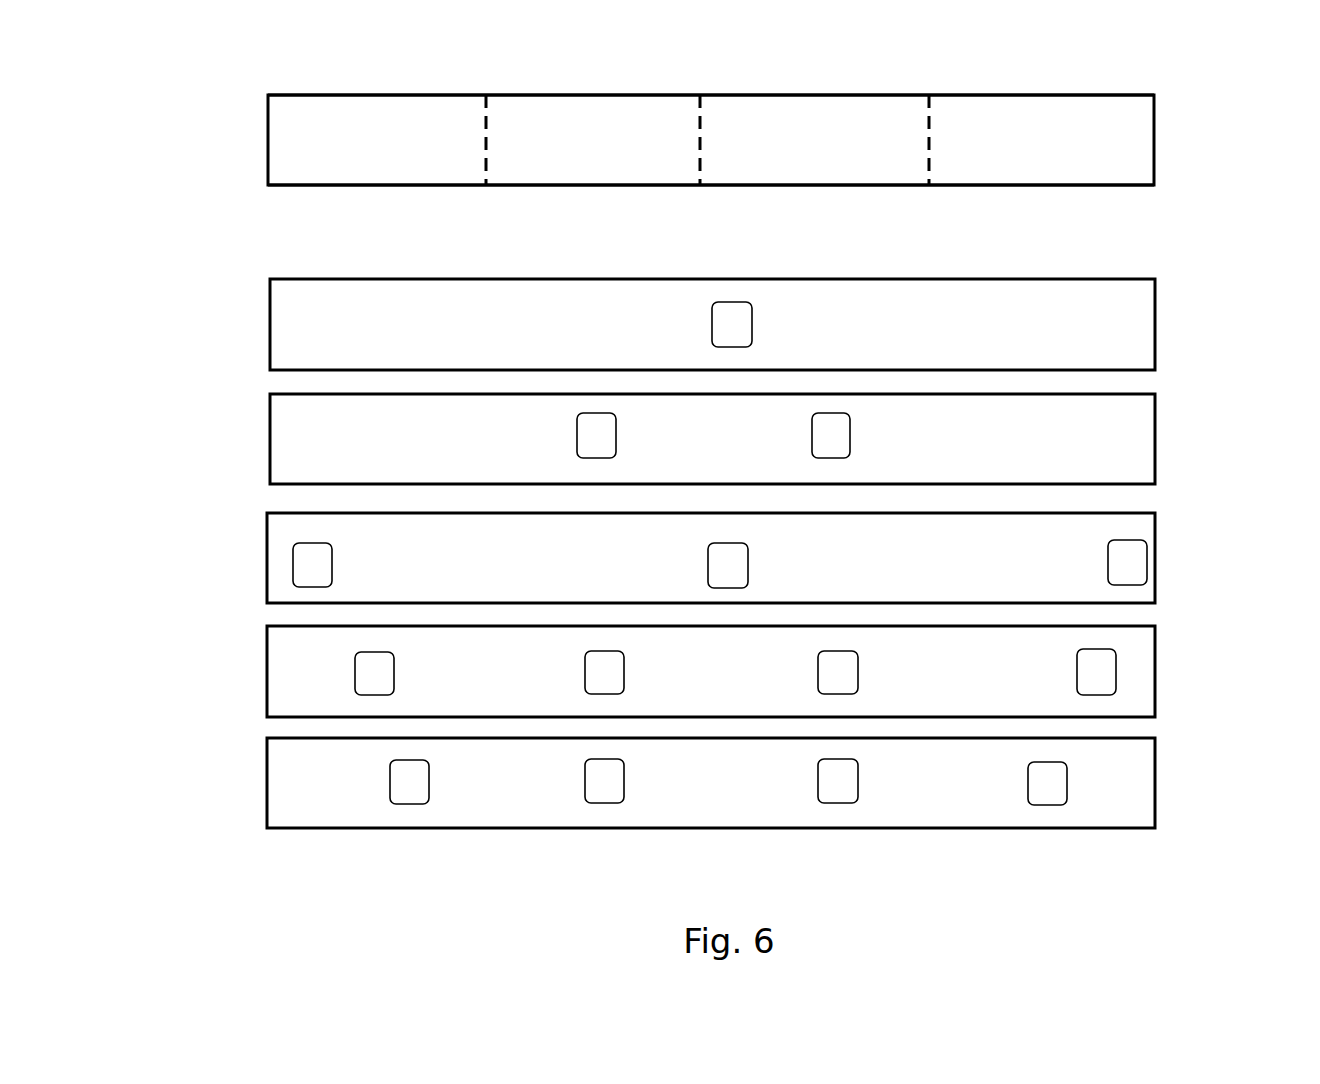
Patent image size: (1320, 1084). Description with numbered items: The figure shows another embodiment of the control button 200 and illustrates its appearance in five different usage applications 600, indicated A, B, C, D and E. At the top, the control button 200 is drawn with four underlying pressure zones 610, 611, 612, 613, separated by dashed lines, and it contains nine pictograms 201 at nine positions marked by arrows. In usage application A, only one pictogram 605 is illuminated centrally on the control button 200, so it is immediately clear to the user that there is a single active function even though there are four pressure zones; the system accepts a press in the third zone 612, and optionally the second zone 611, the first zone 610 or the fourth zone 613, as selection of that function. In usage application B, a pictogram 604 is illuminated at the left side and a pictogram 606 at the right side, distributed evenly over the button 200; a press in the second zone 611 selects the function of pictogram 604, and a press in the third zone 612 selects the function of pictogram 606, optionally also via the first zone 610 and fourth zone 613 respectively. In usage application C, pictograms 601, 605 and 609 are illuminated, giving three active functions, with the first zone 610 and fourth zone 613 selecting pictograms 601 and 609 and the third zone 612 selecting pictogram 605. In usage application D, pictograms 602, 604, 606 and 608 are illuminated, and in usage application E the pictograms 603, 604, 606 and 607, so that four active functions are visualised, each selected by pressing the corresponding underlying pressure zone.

The control button 200 is at (1155, 145).
The pictograms 201 is at (312, 161).
The usage applications 600 is at (220, 307).
The pictogram 601 is at (294, 586).
The pictogram 602 is at (356, 690).
The pictogram 603 is at (410, 805).
The pictogram 604 is at (588, 803).
The pictogram 605 is at (753, 317).
The pictogram 606 is at (837, 803).
The pictogram 607 is at (1050, 806).
The pictogram 608 is at (1115, 688).
The pictogram 609 is at (1142, 580).
The first pressure zone 610 is at (423, 110).
The second pressure zone 611 is at (645, 110).
The third pressure zone 612 is at (893, 110).
The fourth pressure zone 613 is at (982, 113).